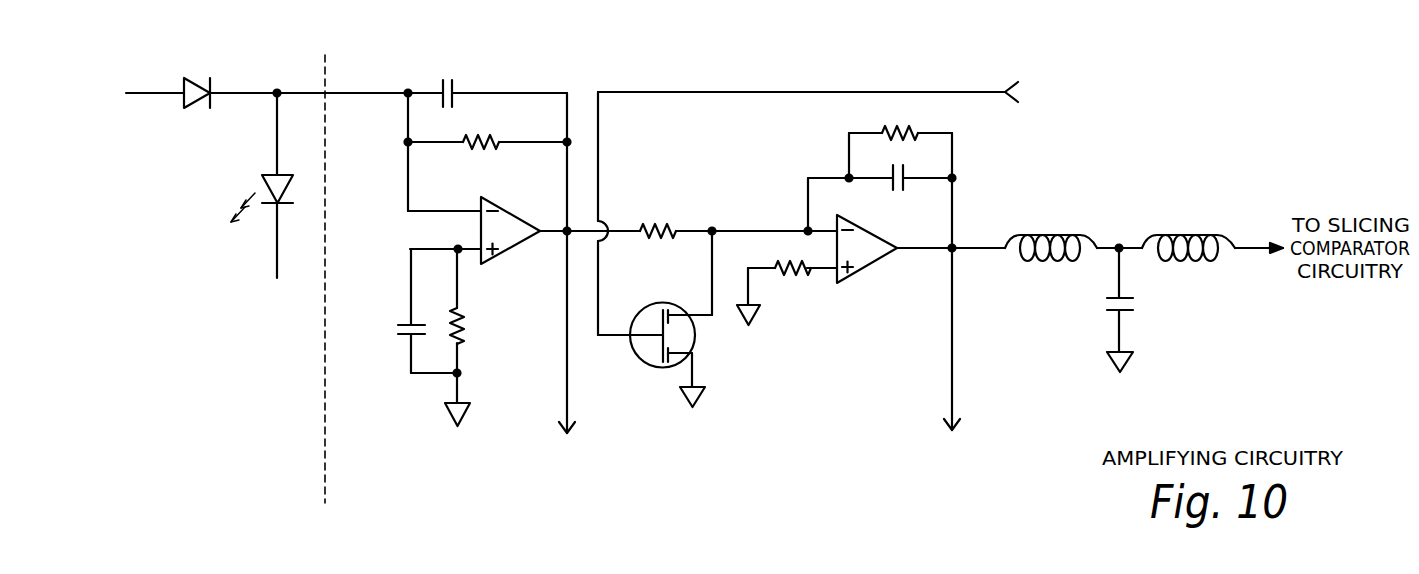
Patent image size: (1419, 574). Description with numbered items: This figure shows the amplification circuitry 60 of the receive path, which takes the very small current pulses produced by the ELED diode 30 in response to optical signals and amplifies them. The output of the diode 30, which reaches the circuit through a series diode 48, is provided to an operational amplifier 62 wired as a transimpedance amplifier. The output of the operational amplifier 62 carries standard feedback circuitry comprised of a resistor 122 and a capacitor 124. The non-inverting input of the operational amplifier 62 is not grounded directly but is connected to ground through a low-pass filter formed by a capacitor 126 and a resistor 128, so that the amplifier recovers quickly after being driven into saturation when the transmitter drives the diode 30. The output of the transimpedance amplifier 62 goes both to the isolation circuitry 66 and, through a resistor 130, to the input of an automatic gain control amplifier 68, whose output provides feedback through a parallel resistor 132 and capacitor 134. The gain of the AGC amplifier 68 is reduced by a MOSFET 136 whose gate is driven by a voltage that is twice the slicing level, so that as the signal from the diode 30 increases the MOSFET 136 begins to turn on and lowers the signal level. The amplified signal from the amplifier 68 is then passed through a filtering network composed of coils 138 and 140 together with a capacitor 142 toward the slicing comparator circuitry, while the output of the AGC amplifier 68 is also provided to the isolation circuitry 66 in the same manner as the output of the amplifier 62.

The diode 48 is at (197, 80).
The ELED diode 30 is at (263, 182).
The amplification circuitry 60 is at (463, 470).
The operational amplifier 62 is at (515, 253).
The isolation circuitry 66 is at (752, 468).
The automatic gain control amplifier 68 is at (868, 267).
The resistor 122 is at (485, 137).
The capacitor 124 is at (449, 80).
The capacitor 126 is at (398, 330).
The resistor 128 is at (468, 322).
The resistor 130 is at (662, 223).
The resistor 132 is at (900, 127).
The capacitor 134 is at (897, 190).
The MOSFET 136 is at (635, 357).
The coil 138 is at (1050, 233).
The coil 140 is at (1183, 233).
The capacitor 142 is at (1107, 305).